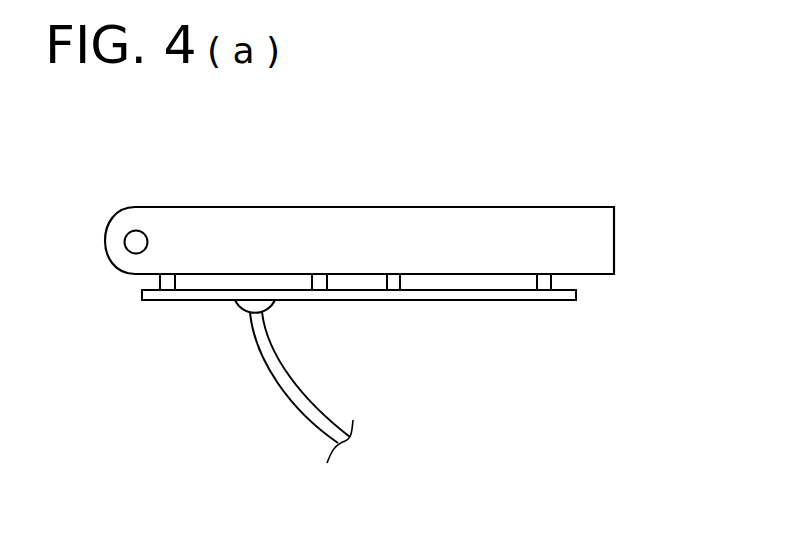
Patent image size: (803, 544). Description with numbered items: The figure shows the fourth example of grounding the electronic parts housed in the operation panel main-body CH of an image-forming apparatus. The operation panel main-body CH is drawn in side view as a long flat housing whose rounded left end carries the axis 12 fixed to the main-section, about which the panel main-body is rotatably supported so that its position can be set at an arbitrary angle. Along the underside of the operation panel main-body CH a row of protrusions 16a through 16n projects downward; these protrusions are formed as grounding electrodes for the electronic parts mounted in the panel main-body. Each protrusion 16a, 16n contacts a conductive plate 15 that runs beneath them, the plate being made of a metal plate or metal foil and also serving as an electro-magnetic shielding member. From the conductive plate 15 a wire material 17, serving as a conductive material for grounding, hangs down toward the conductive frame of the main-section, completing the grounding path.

The operation panel main-body CH is at (370, 198).
The axis 12 is at (136, 230).
The conductive plate 15 is at (430, 300).
The protrusion 16a is at (167, 290).
The protrusion 16n is at (543, 283).
The wire material 17 is at (275, 390).